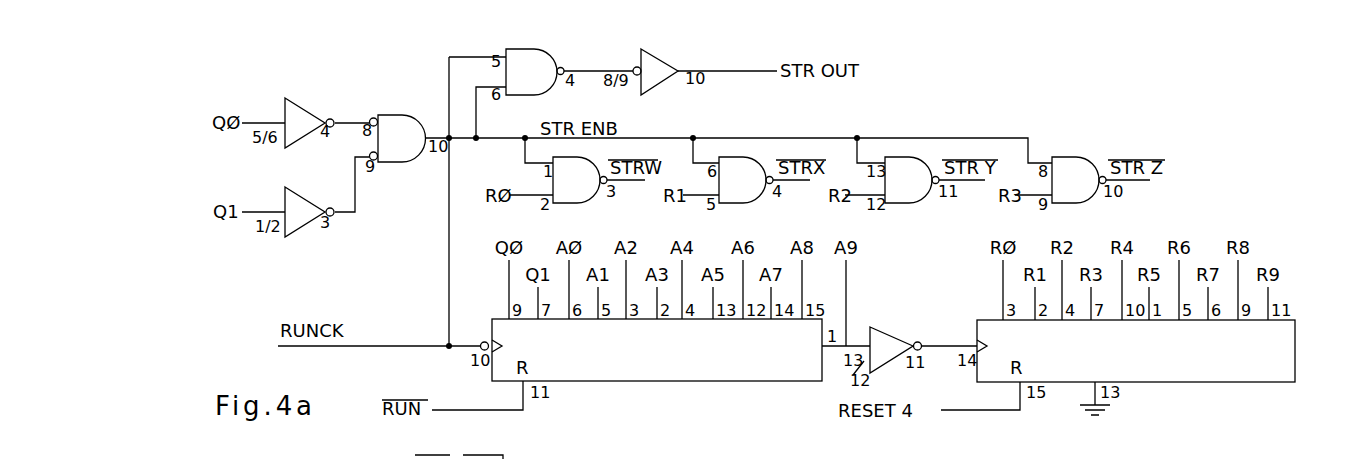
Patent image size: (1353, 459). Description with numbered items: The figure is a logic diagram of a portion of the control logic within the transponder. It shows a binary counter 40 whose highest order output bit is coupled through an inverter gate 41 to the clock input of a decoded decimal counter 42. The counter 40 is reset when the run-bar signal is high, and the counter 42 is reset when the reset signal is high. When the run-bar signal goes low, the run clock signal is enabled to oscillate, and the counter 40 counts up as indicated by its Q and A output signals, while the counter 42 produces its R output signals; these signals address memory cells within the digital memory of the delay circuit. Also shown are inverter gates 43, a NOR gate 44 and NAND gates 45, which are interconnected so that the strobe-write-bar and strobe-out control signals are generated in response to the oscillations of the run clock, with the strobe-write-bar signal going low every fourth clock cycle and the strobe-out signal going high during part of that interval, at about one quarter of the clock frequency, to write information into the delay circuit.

The binary counter 40 is at (720, 382).
The inverter gate 41 is at (883, 334).
The decoded decimal counter 42 is at (1190, 383).
The inverter gates 43 is at (305, 108).
The NOR gate 44 is at (408, 113).
The NAND gates 45 is at (540, 95).